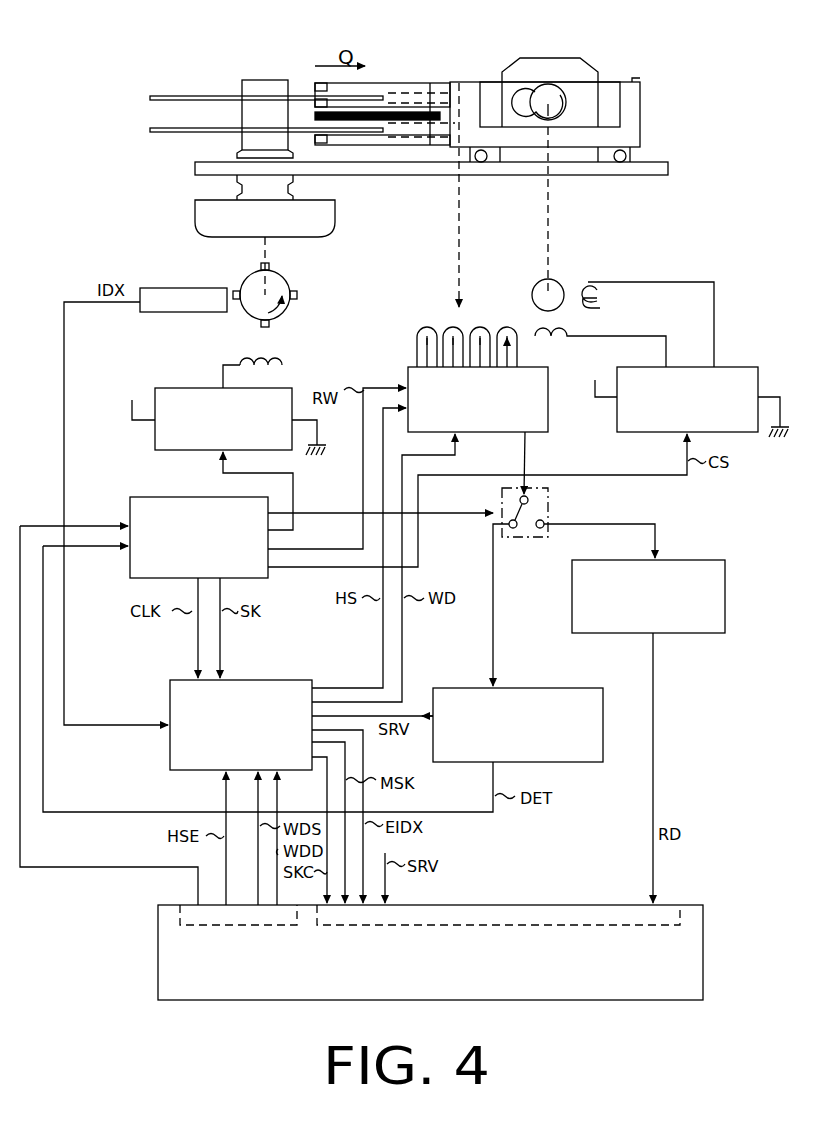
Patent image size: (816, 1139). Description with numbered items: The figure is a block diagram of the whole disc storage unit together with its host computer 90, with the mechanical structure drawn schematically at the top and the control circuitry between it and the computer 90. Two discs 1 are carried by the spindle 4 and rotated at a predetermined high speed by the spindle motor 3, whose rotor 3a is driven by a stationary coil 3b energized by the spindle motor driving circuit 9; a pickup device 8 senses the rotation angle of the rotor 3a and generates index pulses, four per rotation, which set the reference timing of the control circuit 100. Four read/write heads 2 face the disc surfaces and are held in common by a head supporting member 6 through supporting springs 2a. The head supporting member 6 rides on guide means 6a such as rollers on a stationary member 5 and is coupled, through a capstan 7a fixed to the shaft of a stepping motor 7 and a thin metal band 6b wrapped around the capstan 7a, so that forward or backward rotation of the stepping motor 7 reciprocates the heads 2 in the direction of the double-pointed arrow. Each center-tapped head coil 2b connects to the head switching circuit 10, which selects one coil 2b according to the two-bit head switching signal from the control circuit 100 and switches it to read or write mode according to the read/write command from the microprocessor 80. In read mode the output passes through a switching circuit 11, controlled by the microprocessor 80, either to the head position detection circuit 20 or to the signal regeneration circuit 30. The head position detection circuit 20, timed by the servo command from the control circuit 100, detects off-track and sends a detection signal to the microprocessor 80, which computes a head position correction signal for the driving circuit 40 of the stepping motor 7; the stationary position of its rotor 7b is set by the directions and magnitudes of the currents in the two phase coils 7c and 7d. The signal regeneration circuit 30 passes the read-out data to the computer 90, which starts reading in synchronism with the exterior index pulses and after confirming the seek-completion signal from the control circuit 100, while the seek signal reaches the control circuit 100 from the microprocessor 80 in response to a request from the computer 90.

The disc 1 is at (166, 96).
The read/write head 2 is at (315, 85).
The supporting spring 2a is at (412, 83).
The head coil 2b is at (419, 329).
The spindle motor 3 is at (195, 206).
The rotor 3a is at (283, 276).
The stationary coil 3b is at (282, 364).
The spindle 4 is at (255, 80).
The stationary member 5 is at (668, 168).
The head supporting member 6 is at (641, 95).
The guide means 6a is at (628, 156).
The thin metal band 6b is at (612, 82).
The stepping motor 7 is at (559, 58).
The capstan 7a is at (531, 94).
The rotor 7b is at (560, 282).
The phase coil 7c is at (596, 296).
The phase coil 7d is at (535, 334).
The pickup device 8 is at (222, 288).
The spindle motor driving circuit 9 is at (181, 388).
The head switching circuit 10 is at (549, 412).
The switching circuit 11 is at (549, 495).
The head position detection circuit 20 is at (558, 688).
The signal regeneration circuit 30 is at (702, 560).
The driving circuit 40 is at (741, 367).
The microprocessor 80 is at (154, 496).
The computer 90 is at (158, 963).
The control circuit 100 is at (290, 680).